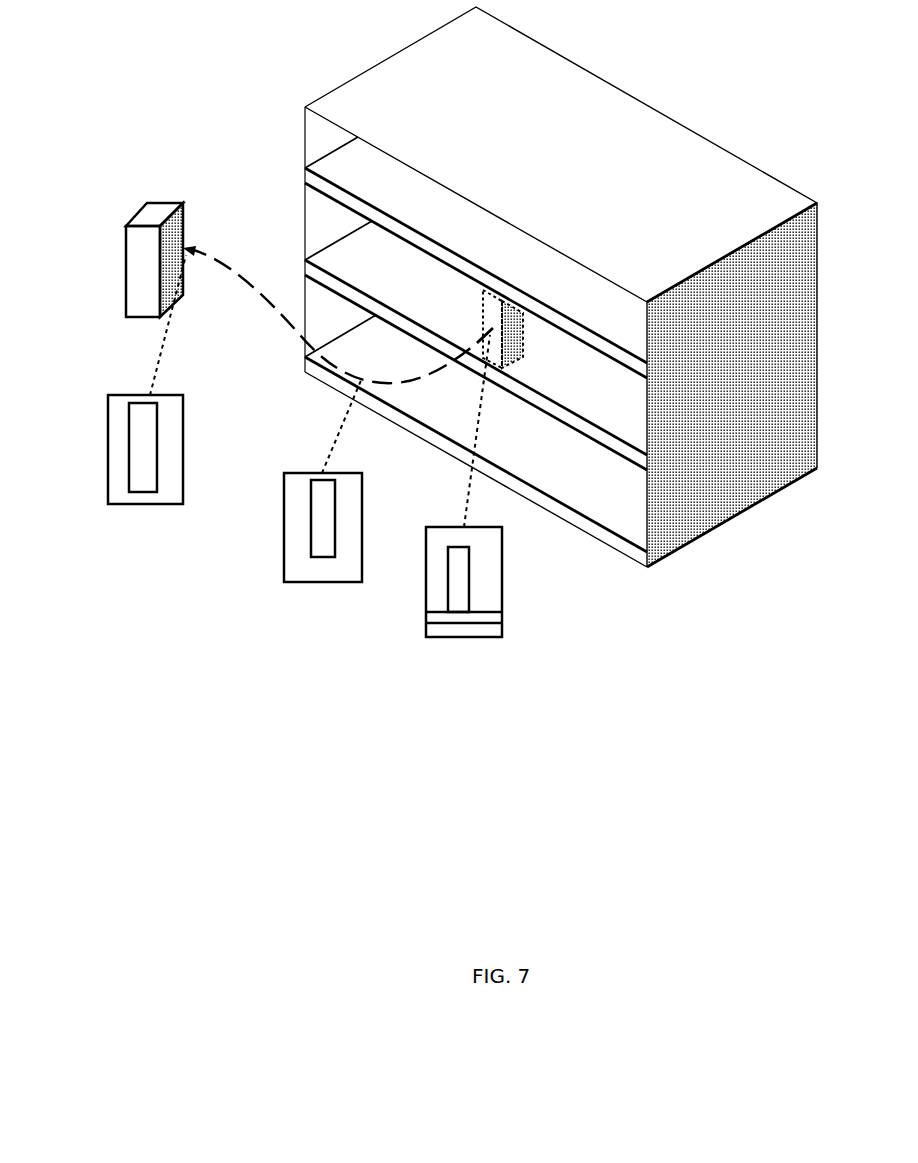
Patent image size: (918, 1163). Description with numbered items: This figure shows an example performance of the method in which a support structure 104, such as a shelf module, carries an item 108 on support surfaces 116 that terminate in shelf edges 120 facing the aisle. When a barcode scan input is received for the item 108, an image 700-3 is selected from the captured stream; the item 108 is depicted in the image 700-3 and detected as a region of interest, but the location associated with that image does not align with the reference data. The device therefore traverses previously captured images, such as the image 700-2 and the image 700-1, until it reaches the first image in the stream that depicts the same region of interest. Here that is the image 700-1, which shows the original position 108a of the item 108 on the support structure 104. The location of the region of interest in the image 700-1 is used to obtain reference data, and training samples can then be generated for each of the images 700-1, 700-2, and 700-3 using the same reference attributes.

The support structure 104 is at (733, 167).
The support surface 116 is at (358, 168).
The shelf edge 120 is at (568, 323).
The item 108 is at (126, 226).
The original position of the item 108a is at (512, 347).
The image 700-1 is at (463, 637).
The image 700-2 is at (320, 582).
The image 700-3 is at (145, 504).